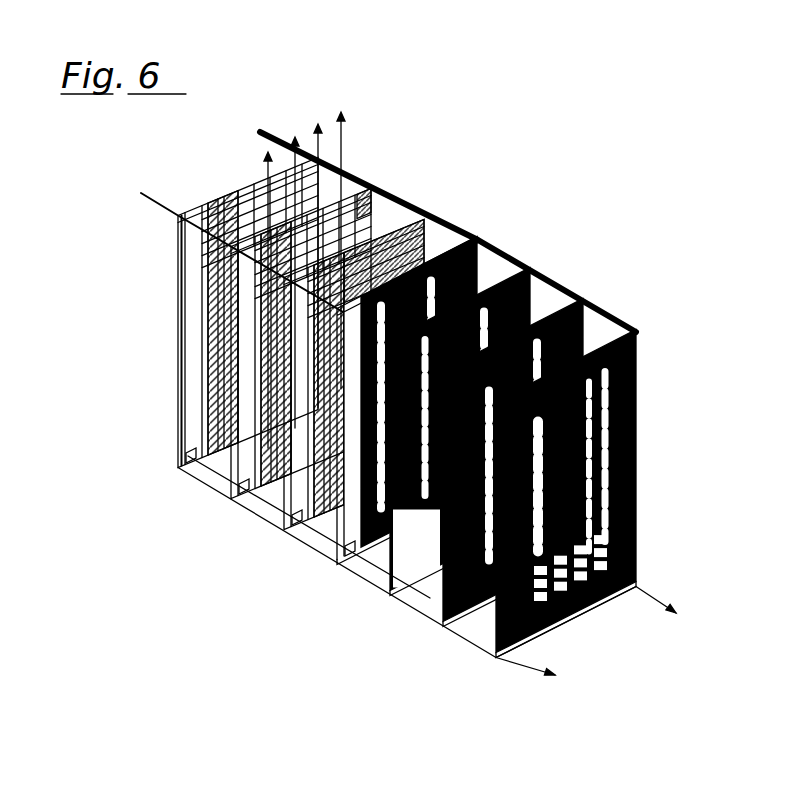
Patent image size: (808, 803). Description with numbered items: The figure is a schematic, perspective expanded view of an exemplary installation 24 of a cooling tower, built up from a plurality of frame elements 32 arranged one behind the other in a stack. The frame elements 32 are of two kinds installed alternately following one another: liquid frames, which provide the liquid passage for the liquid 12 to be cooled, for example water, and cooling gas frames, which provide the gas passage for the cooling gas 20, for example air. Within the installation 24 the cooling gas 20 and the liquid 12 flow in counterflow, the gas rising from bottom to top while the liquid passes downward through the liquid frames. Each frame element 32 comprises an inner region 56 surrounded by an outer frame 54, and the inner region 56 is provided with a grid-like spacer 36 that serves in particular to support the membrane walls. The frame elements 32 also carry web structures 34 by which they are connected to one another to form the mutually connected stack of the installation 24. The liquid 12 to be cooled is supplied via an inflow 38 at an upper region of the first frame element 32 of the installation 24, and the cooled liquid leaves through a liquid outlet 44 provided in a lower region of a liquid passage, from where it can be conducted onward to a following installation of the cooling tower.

The liquid 12 is at (190, 452).
The cooling gas 20 is at (338, 132).
The installation 24 is at (513, 151).
The frame element 32 is at (360, 181).
The web structure 34 is at (207, 190).
The spacer 36 is at (255, 184).
The inflow 38 is at (252, 122).
The liquid outlet 44 is at (652, 590).
The outer frame 54 is at (187, 302).
The inner region 56 is at (193, 320).